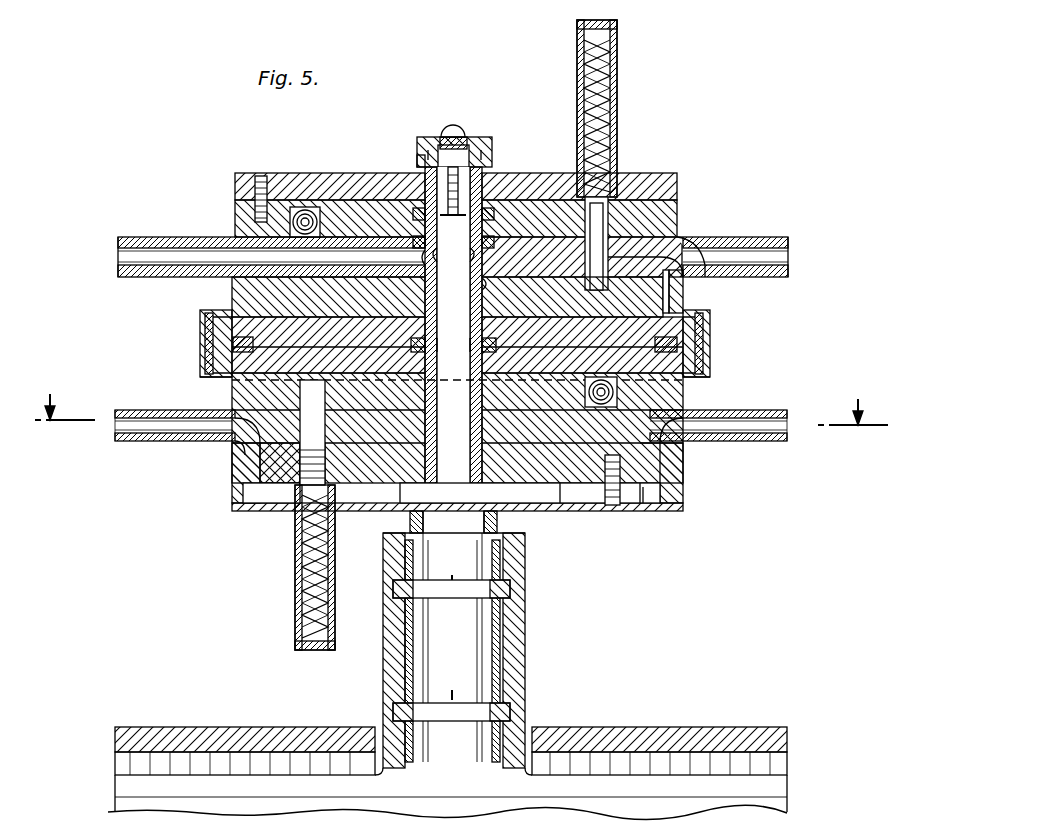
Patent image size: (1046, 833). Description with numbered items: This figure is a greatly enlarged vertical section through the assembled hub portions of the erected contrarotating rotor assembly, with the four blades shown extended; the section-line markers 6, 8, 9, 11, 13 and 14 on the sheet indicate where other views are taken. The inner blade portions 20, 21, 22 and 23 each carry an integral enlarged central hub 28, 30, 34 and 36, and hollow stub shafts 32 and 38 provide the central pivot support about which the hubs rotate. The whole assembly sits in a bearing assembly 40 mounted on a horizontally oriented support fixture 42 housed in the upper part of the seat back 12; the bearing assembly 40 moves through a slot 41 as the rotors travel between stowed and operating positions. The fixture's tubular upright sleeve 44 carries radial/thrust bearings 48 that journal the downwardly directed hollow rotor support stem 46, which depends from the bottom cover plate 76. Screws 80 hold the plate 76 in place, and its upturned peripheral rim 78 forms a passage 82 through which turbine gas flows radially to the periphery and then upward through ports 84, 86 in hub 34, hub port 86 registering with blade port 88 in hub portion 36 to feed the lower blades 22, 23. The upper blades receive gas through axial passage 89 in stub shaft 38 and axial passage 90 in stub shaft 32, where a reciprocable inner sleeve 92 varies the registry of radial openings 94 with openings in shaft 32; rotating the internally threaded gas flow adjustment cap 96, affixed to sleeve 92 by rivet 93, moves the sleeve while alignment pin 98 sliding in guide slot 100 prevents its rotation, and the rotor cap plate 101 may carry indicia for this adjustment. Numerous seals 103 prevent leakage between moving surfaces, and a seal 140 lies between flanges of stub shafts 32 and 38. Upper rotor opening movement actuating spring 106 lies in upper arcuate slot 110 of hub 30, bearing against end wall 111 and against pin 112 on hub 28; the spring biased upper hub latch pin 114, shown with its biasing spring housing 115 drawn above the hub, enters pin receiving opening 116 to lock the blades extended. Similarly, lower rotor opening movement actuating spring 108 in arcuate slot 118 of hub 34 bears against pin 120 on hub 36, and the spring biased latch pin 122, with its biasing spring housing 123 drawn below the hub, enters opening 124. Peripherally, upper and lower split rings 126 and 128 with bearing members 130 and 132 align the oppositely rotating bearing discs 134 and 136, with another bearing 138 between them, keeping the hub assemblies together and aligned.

The section line 6- 6 is at (170, 23).
The section line 8- 8 is at (95, 226).
The section line 9- 9 is at (95, 257).
The section line 11- 11 is at (95, 388).
The seat back 12 is at (712, 728).
The section line 13- 13 is at (457, 18).
The section line 14- 14 is at (468, 41).
The inner blade portion 20 is at (168, 237).
The inner blade portion 21 is at (783, 237).
The inner blade portion 22 is at (142, 442).
The inner blade portion 23 is at (787, 442).
The central hub 28 is at (630, 252).
The central hub 30 is at (248, 212).
The hollow stub shaft 32 is at (418, 162).
The central hub 34 is at (240, 418).
The central hub 36 is at (498, 425).
The hollow stub shaft 38 is at (478, 487).
The bearing assembly 40 is at (380, 676).
The slot 41 is at (518, 740).
The support fixture 42 is at (775, 790).
The tubular upright sleeve 44 is at (520, 650).
The rotor support stem 46 is at (482, 615).
The radial/thrust bearings 48 is at (512, 590).
The bottom cover plate 76 is at (652, 511).
The upturned peripheral rim 78 is at (675, 508).
The screws 80 is at (612, 506).
The passage 82 is at (590, 497).
The port 84 is at (234, 495).
The hub port 86 is at (675, 497).
The blade port 88 is at (675, 458).
The axial passage 89 is at (467, 432).
The axial passage 90 is at (467, 323).
The inner sleeve 92 is at (492, 157).
The rivet 93 is at (452, 125).
The radial openings 94 is at (453, 249).
The gas flow adjustment cap 96 is at (440, 140).
The alignment pin 98 is at (452, 191).
The guide slot 100 is at (459, 225).
The rotor cap plate 101 is at (240, 175).
The seals 103 is at (425, 257).
The upper rotor opening movement actuating spring 106 is at (320, 208).
The lower rotor opening movement actuating spring 108 is at (670, 448).
The upper arcuate slot 110 is at (348, 200).
The end wall 111 is at (264, 178).
The pin 112 is at (573, 170).
The upper hub latch pin 114 is at (612, 185).
The spring housing 115 is at (618, 97).
The pin receiving opening 116 is at (608, 222).
The arcuate slot 118 is at (683, 440).
The pin 120 is at (238, 397).
The latch pin 122 is at (300, 492).
The lower spring housing 123 is at (295, 578).
The opening 124 is at (300, 450).
The upper split ring 126 is at (202, 325).
The lower split ring 128 is at (205, 358).
The upper bearing member 130 is at (225, 312).
The lower bearing member 132 is at (212, 376).
The upper bearing disc 134 is at (672, 302).
The lower bearing disc 136 is at (668, 385).
The bearing 138 is at (225, 343).
The seal 140 is at (453, 353).